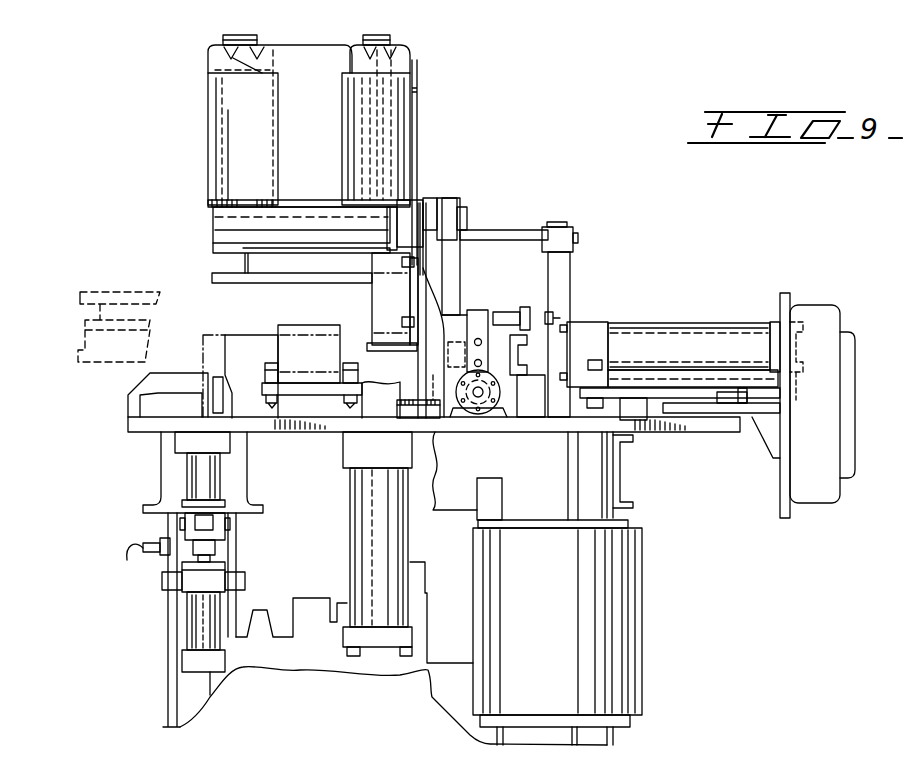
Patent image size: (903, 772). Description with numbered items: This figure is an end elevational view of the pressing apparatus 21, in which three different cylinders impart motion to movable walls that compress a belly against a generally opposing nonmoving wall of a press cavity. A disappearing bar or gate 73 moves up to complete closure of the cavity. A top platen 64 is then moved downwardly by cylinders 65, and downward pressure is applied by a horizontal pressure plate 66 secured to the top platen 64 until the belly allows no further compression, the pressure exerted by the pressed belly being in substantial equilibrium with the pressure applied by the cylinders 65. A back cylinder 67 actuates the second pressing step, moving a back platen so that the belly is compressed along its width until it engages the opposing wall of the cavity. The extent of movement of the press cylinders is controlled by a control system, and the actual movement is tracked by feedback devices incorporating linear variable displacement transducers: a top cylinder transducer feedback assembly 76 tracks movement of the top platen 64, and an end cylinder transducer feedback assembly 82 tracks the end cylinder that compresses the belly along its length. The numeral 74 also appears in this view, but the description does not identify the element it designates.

The pressing apparatus 21 is at (527, 206).
The top platen 64 is at (318, 149).
The cylinders 65 is at (367, 548).
The horizontal pressure plate 66 is at (243, 283).
The back cylinder 67 is at (677, 338).
The disappearing bar or gate 73 is at (208, 392).
The hydraulic cylinder 74 is at (207, 630).
The top cylinder transducer feedback assembly 76 is at (383, 303).
The end cylinder transducer feedback assembly 82 is at (466, 418).